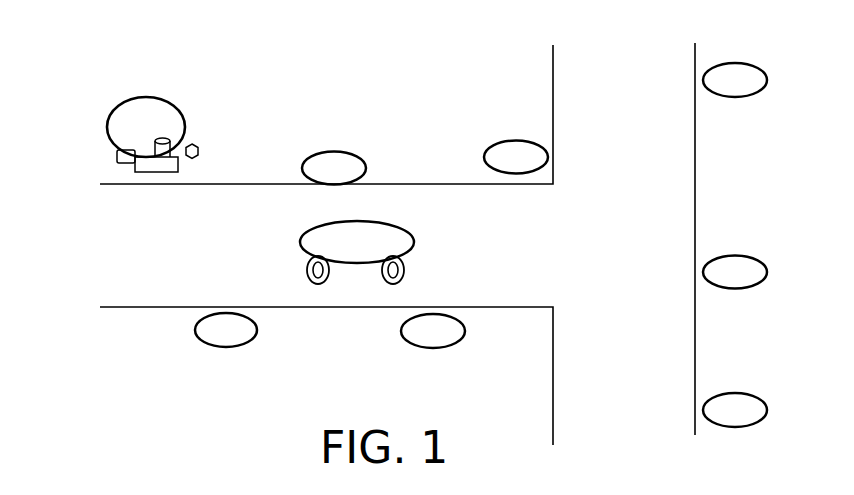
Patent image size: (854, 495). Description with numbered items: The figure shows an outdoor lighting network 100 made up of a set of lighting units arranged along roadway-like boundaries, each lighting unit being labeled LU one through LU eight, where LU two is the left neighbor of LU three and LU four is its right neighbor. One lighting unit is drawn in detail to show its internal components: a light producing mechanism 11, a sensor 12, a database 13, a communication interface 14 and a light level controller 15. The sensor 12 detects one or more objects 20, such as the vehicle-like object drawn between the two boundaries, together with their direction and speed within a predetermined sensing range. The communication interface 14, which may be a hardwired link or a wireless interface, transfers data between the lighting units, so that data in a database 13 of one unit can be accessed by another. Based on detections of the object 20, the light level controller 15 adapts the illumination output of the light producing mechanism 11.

The outdoor lighting network 100 is at (122, 62).
The light producing mechanism 11 is at (117, 157).
The sensor 12 is at (199, 151).
The database 13 is at (174, 116).
The communication interface 14 is at (176, 173).
The light level controller 15 is at (145, 173).
The object 20 is at (357, 252).